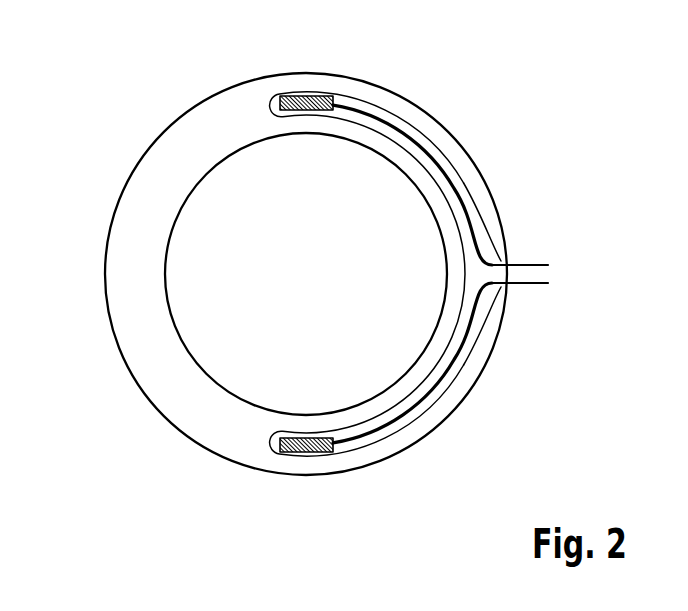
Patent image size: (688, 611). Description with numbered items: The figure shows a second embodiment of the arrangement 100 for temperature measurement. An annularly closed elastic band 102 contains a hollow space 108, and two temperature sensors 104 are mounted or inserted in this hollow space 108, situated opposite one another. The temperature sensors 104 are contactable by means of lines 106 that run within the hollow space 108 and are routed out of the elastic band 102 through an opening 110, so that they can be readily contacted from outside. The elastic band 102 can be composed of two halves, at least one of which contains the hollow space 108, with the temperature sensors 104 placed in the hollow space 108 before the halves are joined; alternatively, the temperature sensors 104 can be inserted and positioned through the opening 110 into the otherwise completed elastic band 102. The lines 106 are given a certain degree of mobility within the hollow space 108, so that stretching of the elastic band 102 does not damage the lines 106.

The arrangement for temperature measurement 100 is at (111, 107).
The elastic band 102 is at (110, 264).
The temperature sensor 104 is at (303, 103).
The line 106 is at (398, 130).
The hollow space 108 is at (460, 187).
The opening 110 is at (500, 259).